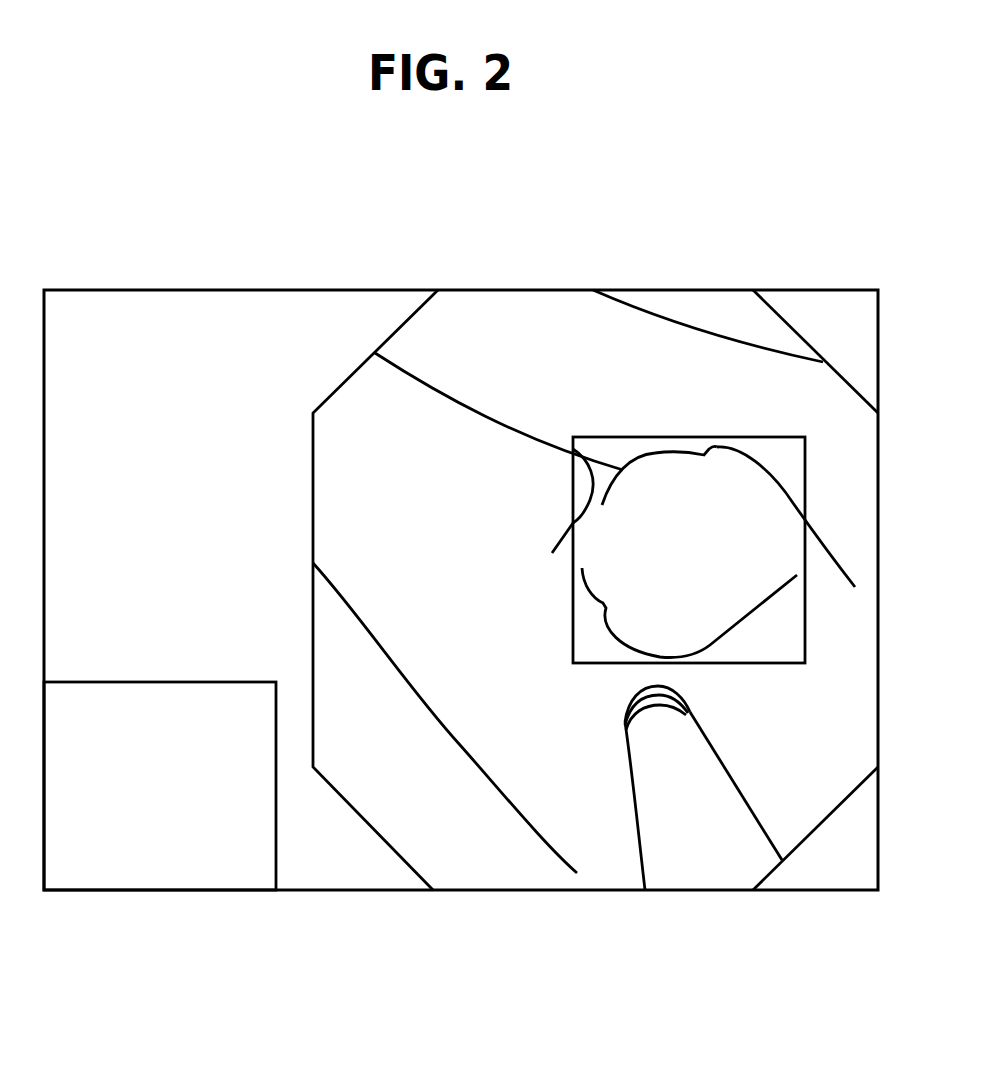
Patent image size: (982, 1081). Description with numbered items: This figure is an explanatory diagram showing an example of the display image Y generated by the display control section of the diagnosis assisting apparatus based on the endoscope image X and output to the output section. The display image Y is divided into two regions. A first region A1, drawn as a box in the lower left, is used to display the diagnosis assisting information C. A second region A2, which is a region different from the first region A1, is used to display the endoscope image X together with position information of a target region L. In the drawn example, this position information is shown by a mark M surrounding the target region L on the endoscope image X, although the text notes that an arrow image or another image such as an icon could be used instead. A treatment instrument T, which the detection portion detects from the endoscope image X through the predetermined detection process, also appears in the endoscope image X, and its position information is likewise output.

The display image Y is at (670, 290).
The endoscope image X is at (375, 392).
The mark M is at (653, 436).
The target region L is at (720, 468).
The treatment instrument T is at (693, 738).
The diagnosis assisting information C is at (115, 853).
The first region A1 is at (160, 813).
The second region A2 is at (607, 853).